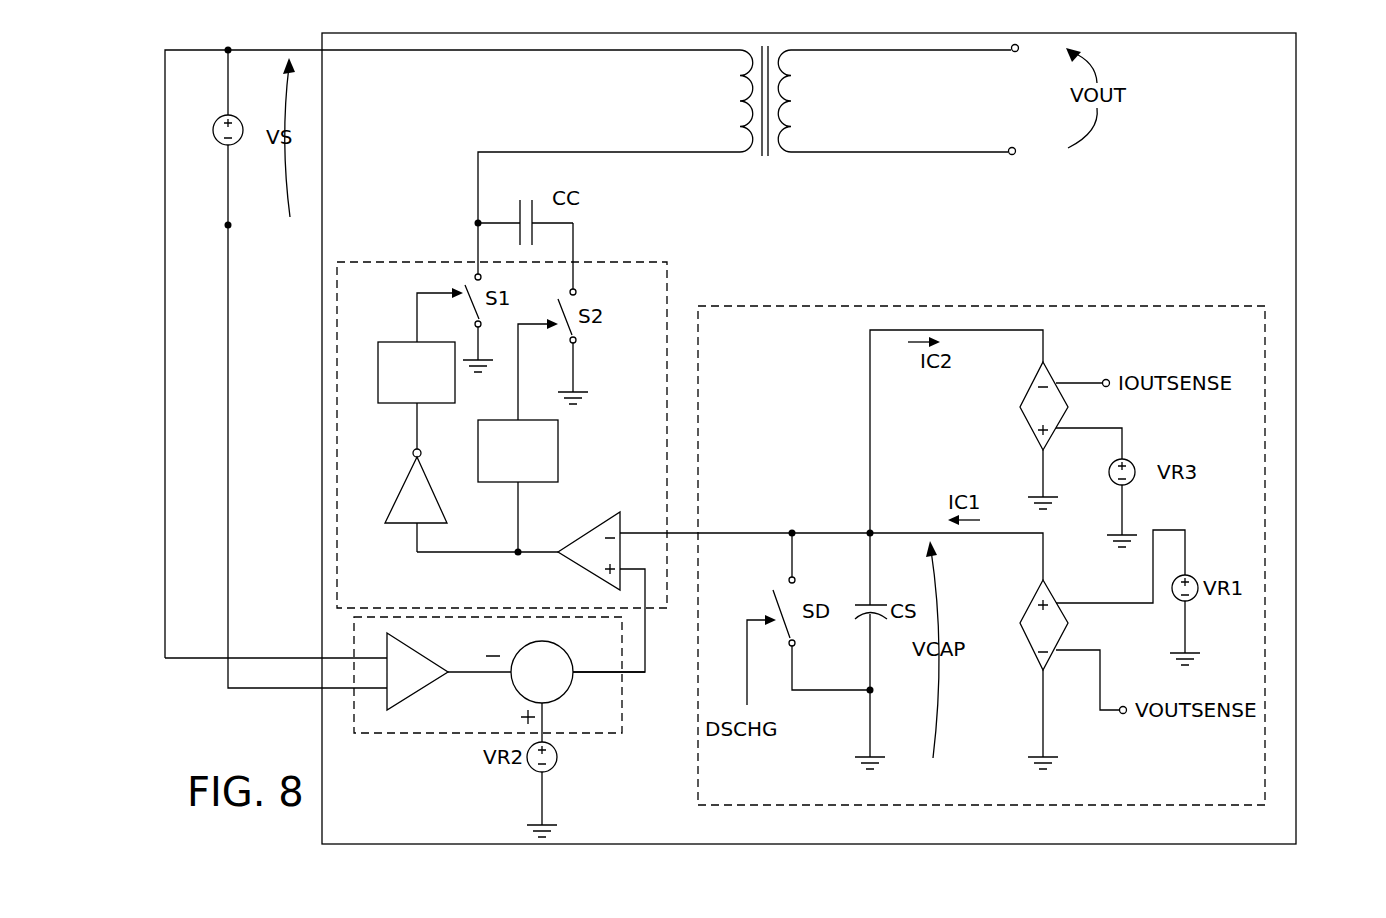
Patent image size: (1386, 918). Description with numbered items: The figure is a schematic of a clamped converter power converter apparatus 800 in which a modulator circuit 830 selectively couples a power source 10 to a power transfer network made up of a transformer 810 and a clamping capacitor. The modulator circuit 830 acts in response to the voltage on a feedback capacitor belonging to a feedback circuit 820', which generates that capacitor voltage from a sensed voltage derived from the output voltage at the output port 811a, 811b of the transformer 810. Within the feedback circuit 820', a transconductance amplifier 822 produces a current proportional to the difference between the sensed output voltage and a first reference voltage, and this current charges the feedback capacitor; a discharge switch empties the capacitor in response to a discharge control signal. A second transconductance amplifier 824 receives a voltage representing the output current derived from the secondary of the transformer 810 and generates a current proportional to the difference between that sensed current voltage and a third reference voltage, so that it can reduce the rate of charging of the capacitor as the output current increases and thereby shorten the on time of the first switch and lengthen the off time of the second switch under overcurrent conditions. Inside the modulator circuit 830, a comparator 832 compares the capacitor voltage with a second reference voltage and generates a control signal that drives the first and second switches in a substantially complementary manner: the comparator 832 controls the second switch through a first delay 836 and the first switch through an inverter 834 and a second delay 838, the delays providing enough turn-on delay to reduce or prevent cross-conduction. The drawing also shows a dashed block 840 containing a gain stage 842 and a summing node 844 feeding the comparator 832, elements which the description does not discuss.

The power source 10 is at (213, 128).
The clamped converter power converter apparatus 800 is at (1297, 428).
The transformer 810 is at (762, 168).
The output port 811a is at (1010, 53).
The output port 811b is at (1008, 157).
The feedback circuit 820' is at (981, 533).
The transconductance amplifier 822 is at (1021, 622).
The second transconductance amplifier 824 is at (1021, 405).
The modulator circuit 830 is at (667, 432).
The comparator 832 is at (588, 527).
The inverter 834 is at (412, 468).
The first delay 836 is at (559, 452).
The second delay 838 is at (377, 372).
The error amplifier block 840 is at (485, 733).
The gain amplifier 842 is at (410, 694).
The summer 844 is at (540, 641).